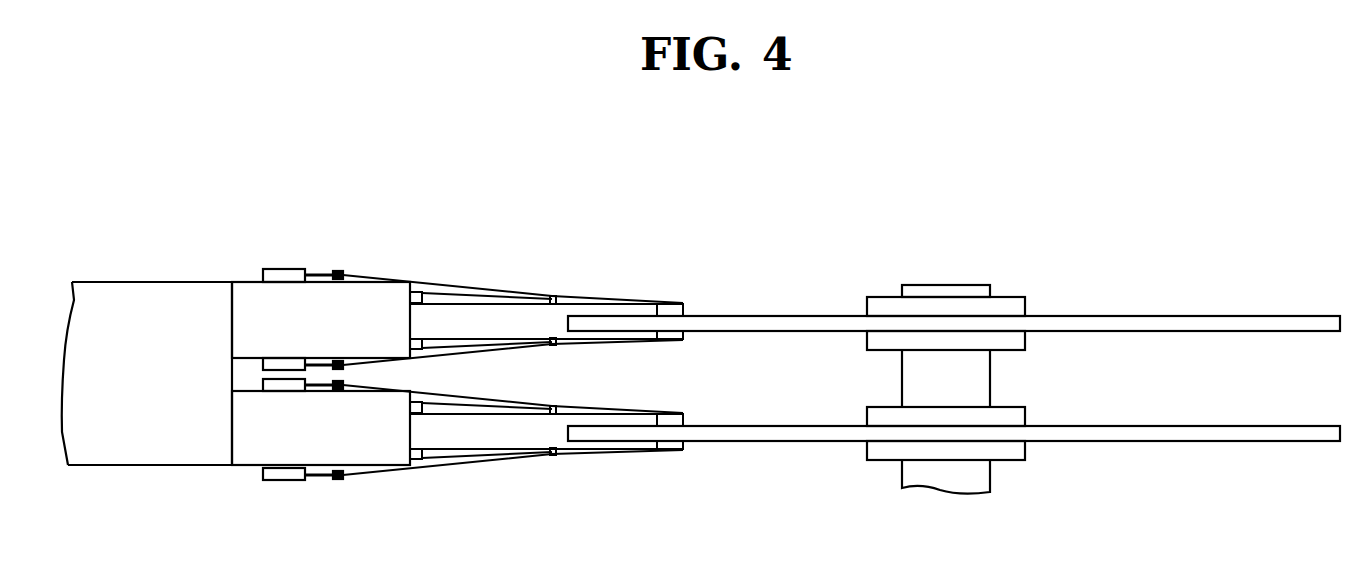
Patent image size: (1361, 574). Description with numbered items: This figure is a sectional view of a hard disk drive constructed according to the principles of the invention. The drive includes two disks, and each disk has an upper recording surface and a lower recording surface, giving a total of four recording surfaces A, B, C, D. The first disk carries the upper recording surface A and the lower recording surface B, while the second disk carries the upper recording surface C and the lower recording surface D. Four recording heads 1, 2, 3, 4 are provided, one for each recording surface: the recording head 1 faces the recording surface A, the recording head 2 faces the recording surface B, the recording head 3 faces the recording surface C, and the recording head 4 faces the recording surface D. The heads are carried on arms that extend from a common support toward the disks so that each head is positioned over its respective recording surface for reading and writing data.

The recording head 1 is at (685, 303).
The recording head 2 is at (687, 339).
The recording head 3 is at (688, 419).
The recording head 4 is at (687, 452).
The recording surface A is at (770, 315).
The recording surface B is at (770, 332).
The recording surface C is at (797, 425).
The recording surface D is at (793, 442).